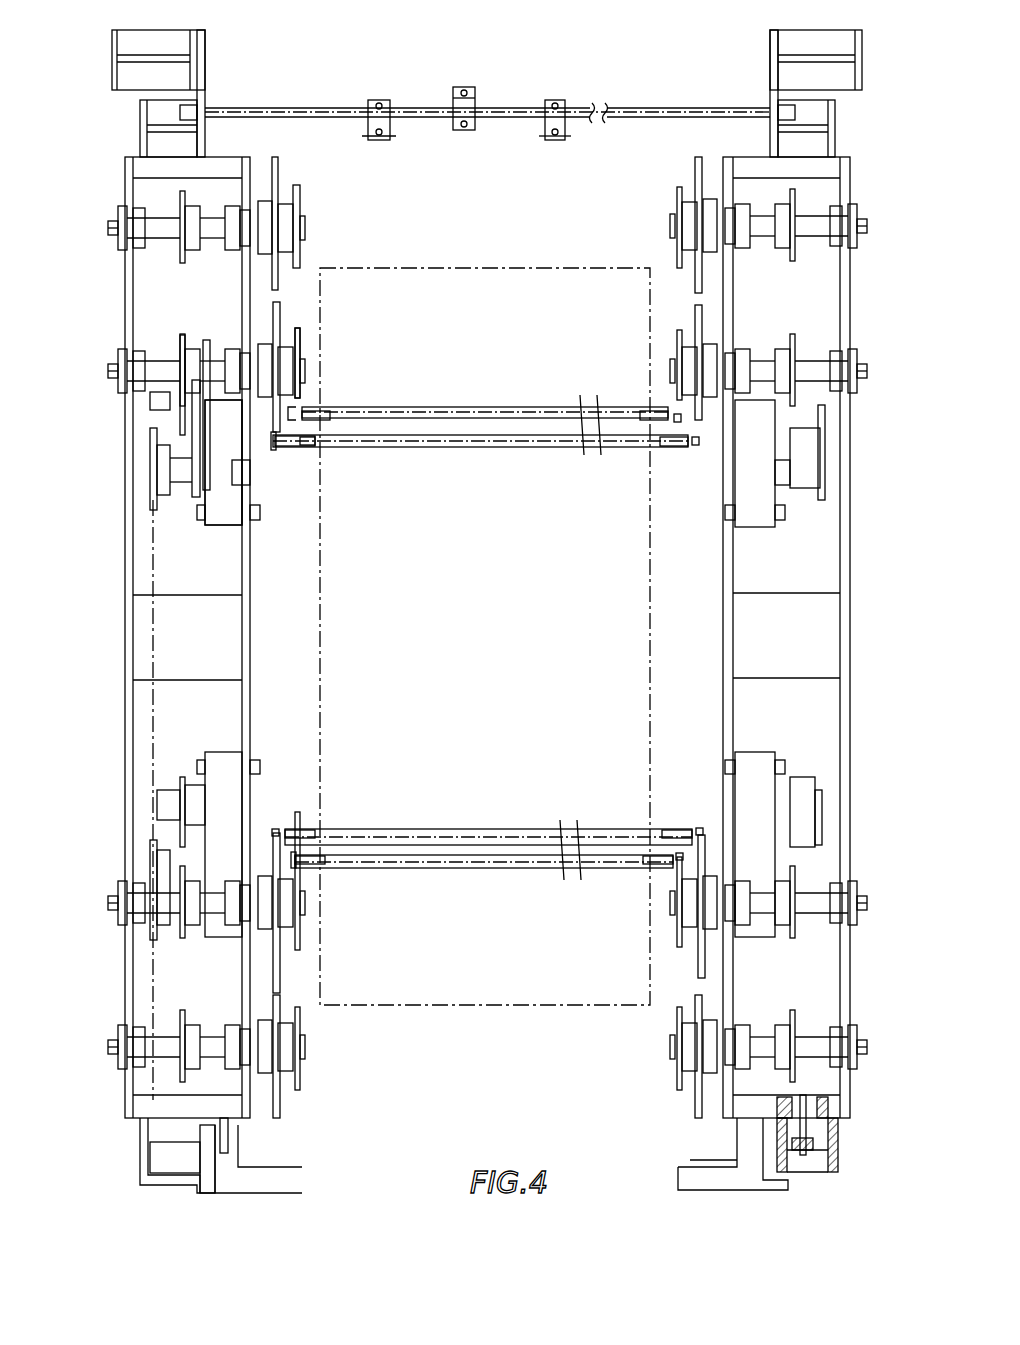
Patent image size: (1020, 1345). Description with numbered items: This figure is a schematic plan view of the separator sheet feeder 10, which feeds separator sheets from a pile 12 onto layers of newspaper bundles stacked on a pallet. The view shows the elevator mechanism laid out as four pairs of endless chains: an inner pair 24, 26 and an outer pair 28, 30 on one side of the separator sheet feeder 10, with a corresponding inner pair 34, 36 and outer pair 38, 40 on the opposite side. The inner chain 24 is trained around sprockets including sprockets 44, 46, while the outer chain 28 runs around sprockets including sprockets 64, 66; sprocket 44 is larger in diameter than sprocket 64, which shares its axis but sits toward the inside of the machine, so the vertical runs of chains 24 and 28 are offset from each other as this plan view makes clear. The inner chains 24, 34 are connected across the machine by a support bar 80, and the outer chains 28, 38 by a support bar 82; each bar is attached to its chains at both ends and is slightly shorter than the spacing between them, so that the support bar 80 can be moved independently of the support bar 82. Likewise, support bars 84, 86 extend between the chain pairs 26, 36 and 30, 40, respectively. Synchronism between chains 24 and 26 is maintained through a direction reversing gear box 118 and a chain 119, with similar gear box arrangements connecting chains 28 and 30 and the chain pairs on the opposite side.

The separator sheet feeder 10 is at (608, 75).
The pile 12 is at (547, 1023).
The inner endless chain 24 is at (275, 450).
The inner endless chain 26 is at (275, 826).
The outer endless chain 28 is at (317, 444).
The outer endless chain 30 is at (309, 868).
The inner endless chain 34 is at (696, 446).
The inner endless chain 36 is at (700, 828).
The outer endless chain 38 is at (676, 420).
The outer endless chain 40 is at (674, 858).
The sprocket 44 is at (273, 409).
The sprocket 46 is at (280, 174).
The sprocket 64 is at (300, 330).
The sprocket 66 is at (300, 194).
The support bar 80 is at (434, 448).
The support bar 82 is at (462, 408).
The support bar 84 is at (512, 829).
The support bar 86 is at (492, 868).
The direction reversing gear box 118 is at (220, 518).
The chain 119 is at (153, 707).